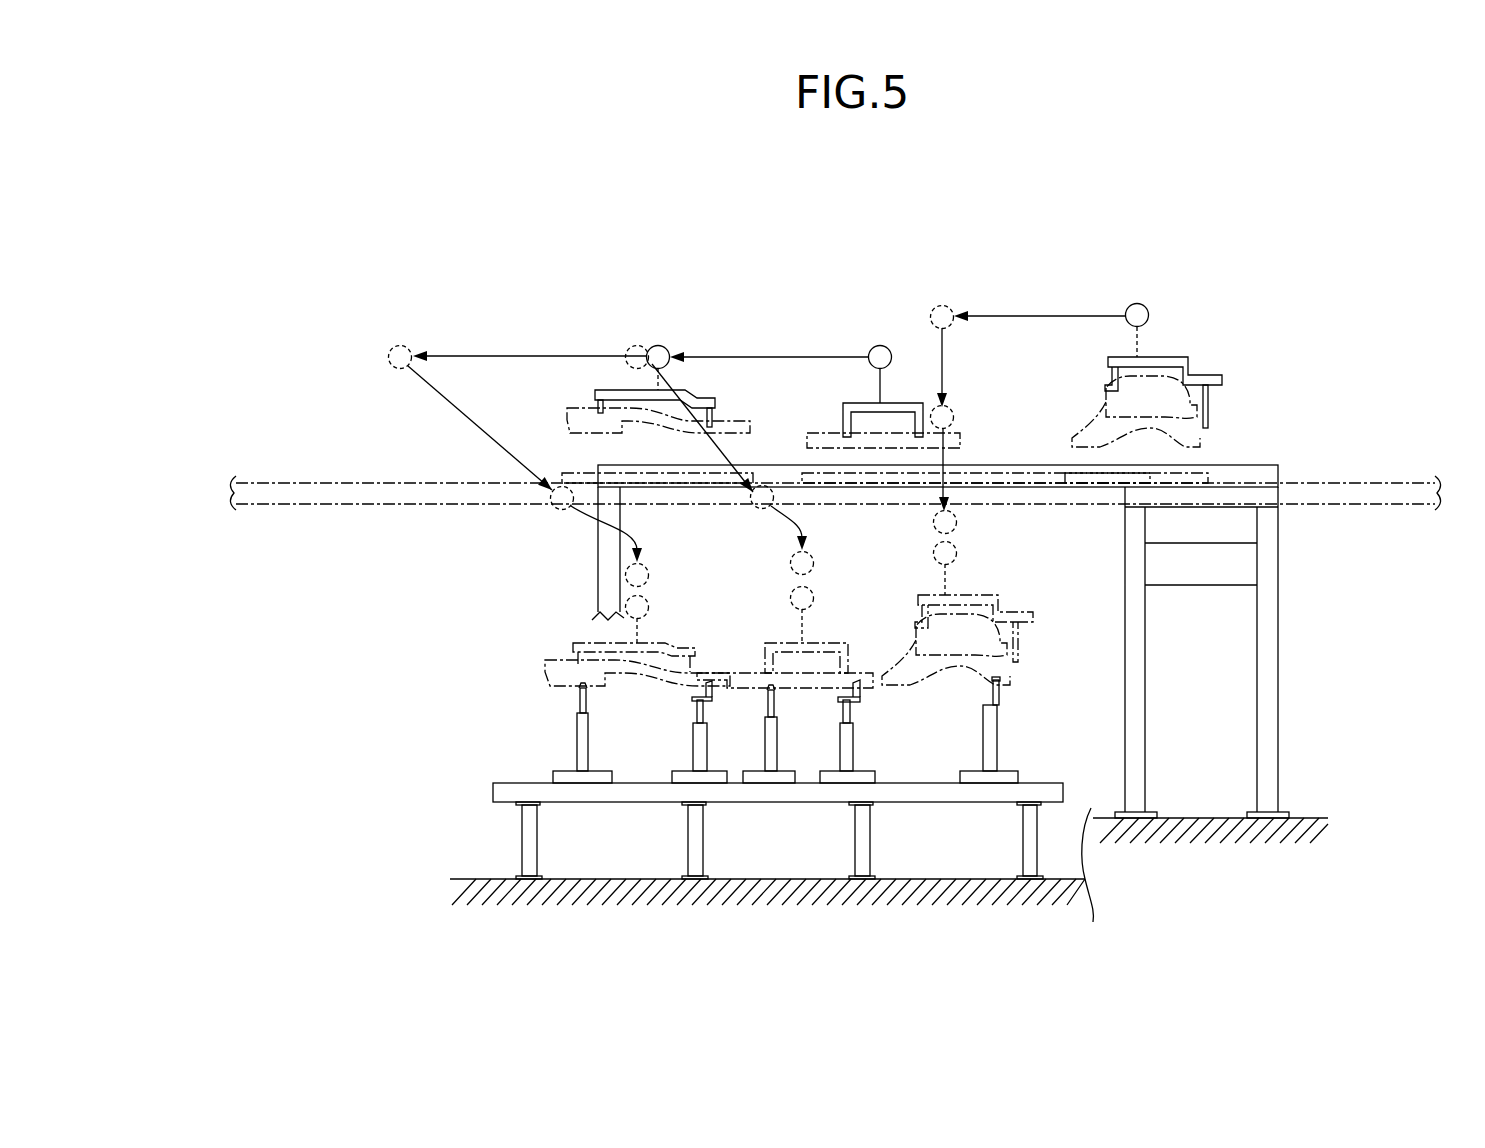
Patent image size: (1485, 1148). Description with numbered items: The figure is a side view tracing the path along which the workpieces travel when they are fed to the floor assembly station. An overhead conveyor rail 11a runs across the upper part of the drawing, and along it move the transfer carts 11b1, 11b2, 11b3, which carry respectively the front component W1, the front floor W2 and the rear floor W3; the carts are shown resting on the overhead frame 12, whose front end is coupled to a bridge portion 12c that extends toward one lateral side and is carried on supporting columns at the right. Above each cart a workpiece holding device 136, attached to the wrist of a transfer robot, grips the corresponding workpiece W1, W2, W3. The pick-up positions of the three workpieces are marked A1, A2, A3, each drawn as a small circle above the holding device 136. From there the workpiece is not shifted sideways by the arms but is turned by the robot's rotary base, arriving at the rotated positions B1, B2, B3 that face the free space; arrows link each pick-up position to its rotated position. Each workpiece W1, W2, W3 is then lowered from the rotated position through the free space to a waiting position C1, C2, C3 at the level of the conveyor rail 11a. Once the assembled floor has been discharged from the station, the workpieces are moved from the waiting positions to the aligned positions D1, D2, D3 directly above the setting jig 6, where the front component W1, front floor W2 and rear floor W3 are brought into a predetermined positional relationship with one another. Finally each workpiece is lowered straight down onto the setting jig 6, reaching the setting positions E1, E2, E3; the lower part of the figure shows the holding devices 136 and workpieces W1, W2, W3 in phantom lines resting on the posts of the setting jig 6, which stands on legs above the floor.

The overhead conveyor rail 11a is at (262, 480).
The overhead frame 12 is at (771, 465).
The bridge portion 12c is at (1243, 494).
The transfer cart 11b1 is at (1195, 476).
The transfer cart 11b2 is at (837, 472).
The transfer cart 11b3 is at (745, 470).
The workpiece holding device 136 is at (598, 392).
The setting jig 6 is at (911, 793).
The front component W1 is at (1090, 427).
The front floor W2 is at (818, 434).
The rear floor W3 is at (572, 422).
The pick-up position A1 is at (1140, 304).
The pick-up position A2 is at (878, 346).
The pick-up position A3 is at (660, 346).
The rotated position B1 is at (942, 306).
The rotated position B2 is at (637, 345).
The rotated position B3 is at (400, 345).
The waiting position C1 is at (952, 411).
The waiting position C2 is at (756, 508).
The waiting position C3 is at (556, 509).
The aligned position D1 is at (935, 525).
The aligned position D2 is at (792, 566).
The aligned position D3 is at (627, 578).
The setting position E1 is at (956, 553).
The setting position E2 is at (812, 598).
The setting position E3 is at (648, 608).